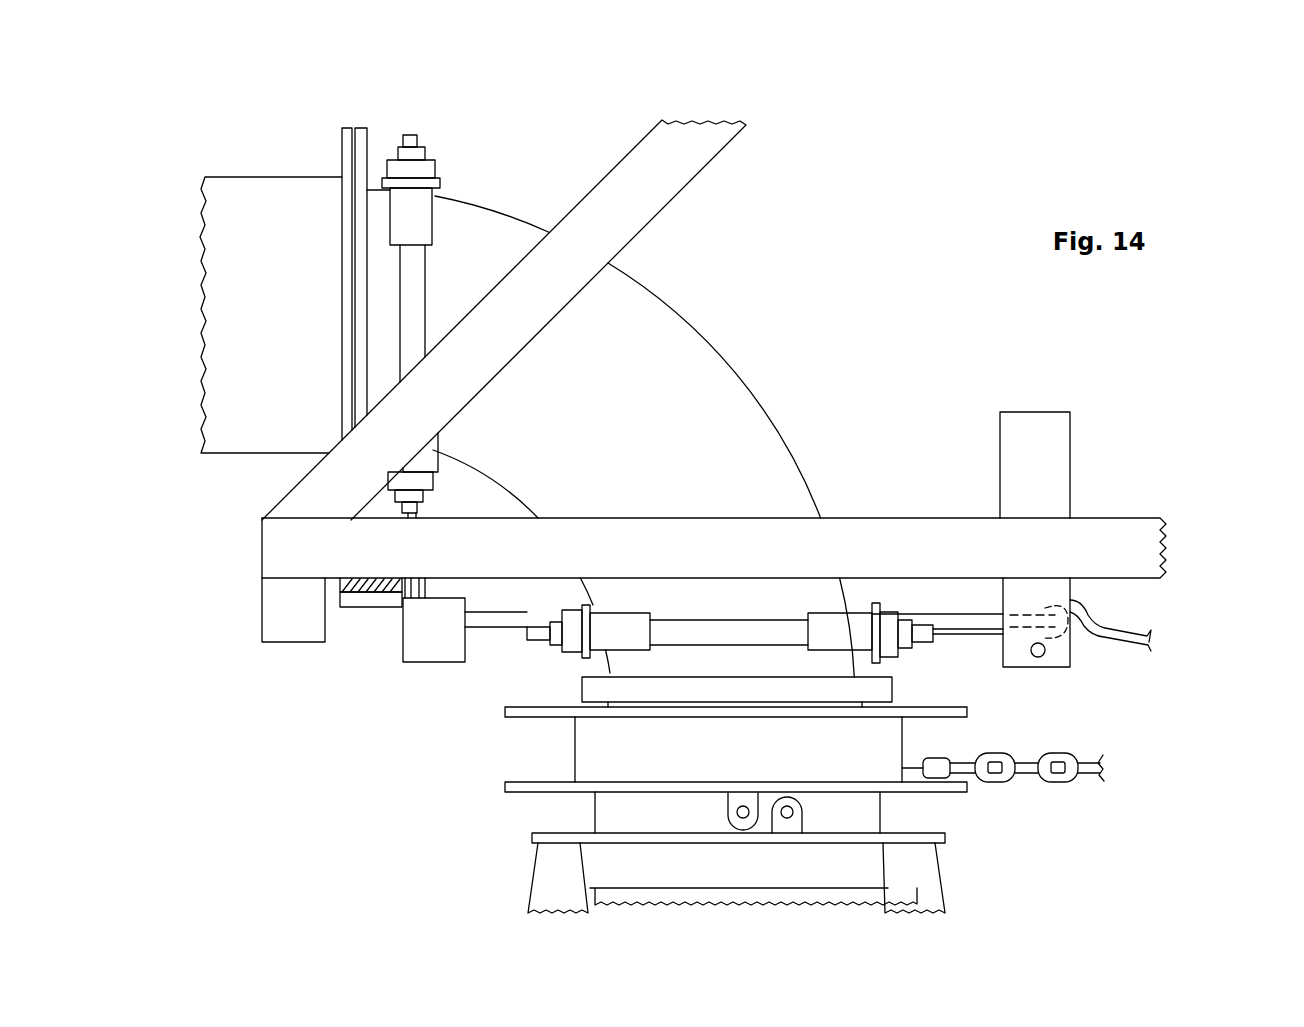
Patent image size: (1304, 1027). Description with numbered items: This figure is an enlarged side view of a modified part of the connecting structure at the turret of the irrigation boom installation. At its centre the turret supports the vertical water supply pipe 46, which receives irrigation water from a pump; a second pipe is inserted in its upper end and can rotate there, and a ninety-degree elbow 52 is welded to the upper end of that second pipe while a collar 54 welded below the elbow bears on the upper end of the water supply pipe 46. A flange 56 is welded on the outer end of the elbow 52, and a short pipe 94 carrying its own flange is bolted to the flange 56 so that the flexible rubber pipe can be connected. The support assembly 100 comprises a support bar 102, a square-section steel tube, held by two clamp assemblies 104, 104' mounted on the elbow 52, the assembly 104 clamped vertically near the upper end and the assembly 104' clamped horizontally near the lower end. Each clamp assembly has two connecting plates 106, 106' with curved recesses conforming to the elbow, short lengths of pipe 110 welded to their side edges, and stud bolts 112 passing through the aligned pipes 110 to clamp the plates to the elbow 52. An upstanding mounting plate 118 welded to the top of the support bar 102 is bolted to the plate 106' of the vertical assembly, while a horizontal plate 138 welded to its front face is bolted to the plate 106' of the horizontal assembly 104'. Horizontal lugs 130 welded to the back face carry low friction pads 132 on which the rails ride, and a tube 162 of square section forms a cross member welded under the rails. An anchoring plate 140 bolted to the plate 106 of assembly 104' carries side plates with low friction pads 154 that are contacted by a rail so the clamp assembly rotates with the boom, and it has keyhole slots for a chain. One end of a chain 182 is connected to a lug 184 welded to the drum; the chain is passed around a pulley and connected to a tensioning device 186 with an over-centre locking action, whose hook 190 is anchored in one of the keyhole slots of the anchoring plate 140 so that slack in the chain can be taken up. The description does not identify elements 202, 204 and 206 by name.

The water supply pipe 46 is at (593, 811).
The elbow 52 is at (760, 415).
The collar 54 is at (580, 684).
The flange 56 is at (362, 127).
The short pipe 94 is at (262, 180).
The support assembly 100 is at (428, 712).
The support bar 102 is at (398, 652).
The clamp assembly 104 is at (643, 420).
The clamp assembly 104' is at (765, 598).
The connecting plate 106 is at (684, 396).
The connecting plate 106' is at (527, 561).
The short lengths of pipe 110 is at (395, 211).
The stud bolts 112 is at (423, 273).
The mounting plate 118 is at (427, 590).
The lug 130 is at (353, 600).
The pad 132 is at (341, 600).
The plate 138 is at (488, 622).
The anchoring plate 140 is at (963, 630).
The pad 154 is at (1060, 437).
The tube 162 is at (265, 612).
The chain 182 is at (1098, 770).
The lug 184 is at (910, 753).
The tensioning device 186 is at (1153, 625).
The hook 190 is at (1087, 633).
The eye bracket 202 is at (723, 798).
The pin 204 is at (804, 813).
The eye bracket 206 is at (781, 806).